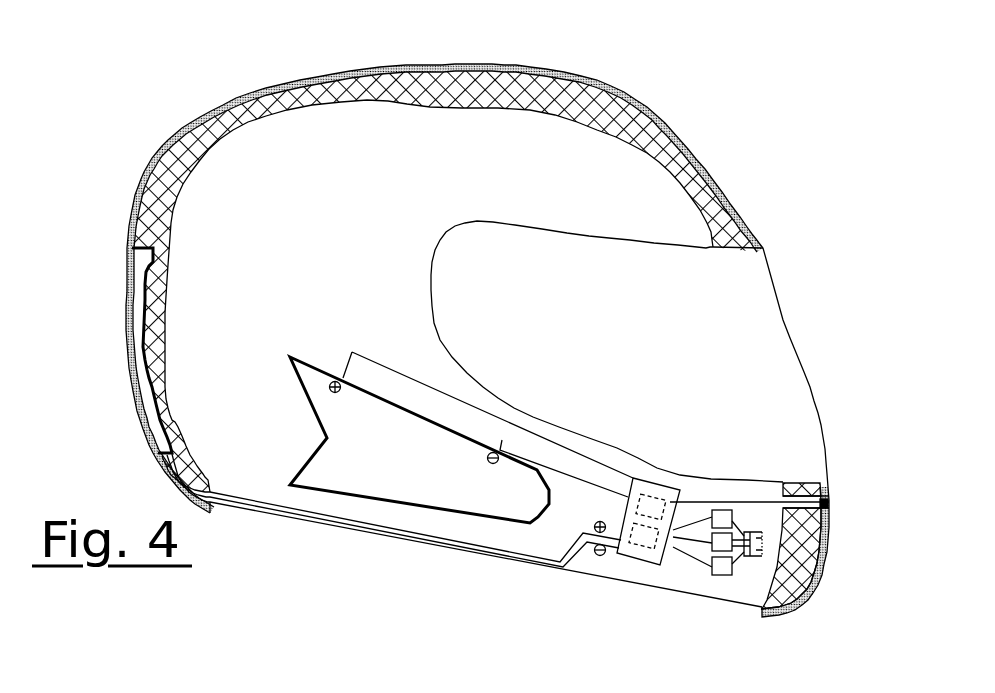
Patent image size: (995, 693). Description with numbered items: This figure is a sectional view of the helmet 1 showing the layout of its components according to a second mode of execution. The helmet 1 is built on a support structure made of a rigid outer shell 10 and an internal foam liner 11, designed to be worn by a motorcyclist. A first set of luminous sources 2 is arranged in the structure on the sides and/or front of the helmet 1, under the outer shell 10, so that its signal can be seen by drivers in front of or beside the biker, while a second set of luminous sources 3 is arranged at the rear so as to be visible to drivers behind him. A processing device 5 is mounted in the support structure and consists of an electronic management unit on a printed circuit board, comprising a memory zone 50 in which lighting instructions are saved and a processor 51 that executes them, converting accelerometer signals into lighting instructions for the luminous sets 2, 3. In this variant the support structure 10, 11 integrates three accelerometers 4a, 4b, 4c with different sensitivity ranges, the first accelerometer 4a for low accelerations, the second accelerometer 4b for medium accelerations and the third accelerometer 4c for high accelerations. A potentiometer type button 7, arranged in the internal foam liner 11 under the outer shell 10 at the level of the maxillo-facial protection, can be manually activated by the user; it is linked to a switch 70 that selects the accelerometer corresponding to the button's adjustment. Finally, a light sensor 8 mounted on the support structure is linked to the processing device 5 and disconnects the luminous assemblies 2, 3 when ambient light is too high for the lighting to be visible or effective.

The helmet 1 is at (755, 129).
The first set of luminous sources 2 is at (302, 352).
The second set of luminous sources 3 is at (121, 300).
The first accelerometer 4a is at (723, 577).
The second accelerometer 4b is at (713, 545).
The third accelerometer 4c is at (723, 508).
The processing device 5 is at (670, 483).
The potentiometer type button 7 is at (765, 558).
The light sensor 8 is at (831, 497).
The outer shell 10 is at (227, 102).
The internal foam liner 11 is at (283, 83).
The memory zone 50 is at (643, 543).
The processor 51 is at (651, 500).
The switch 70 is at (760, 532).